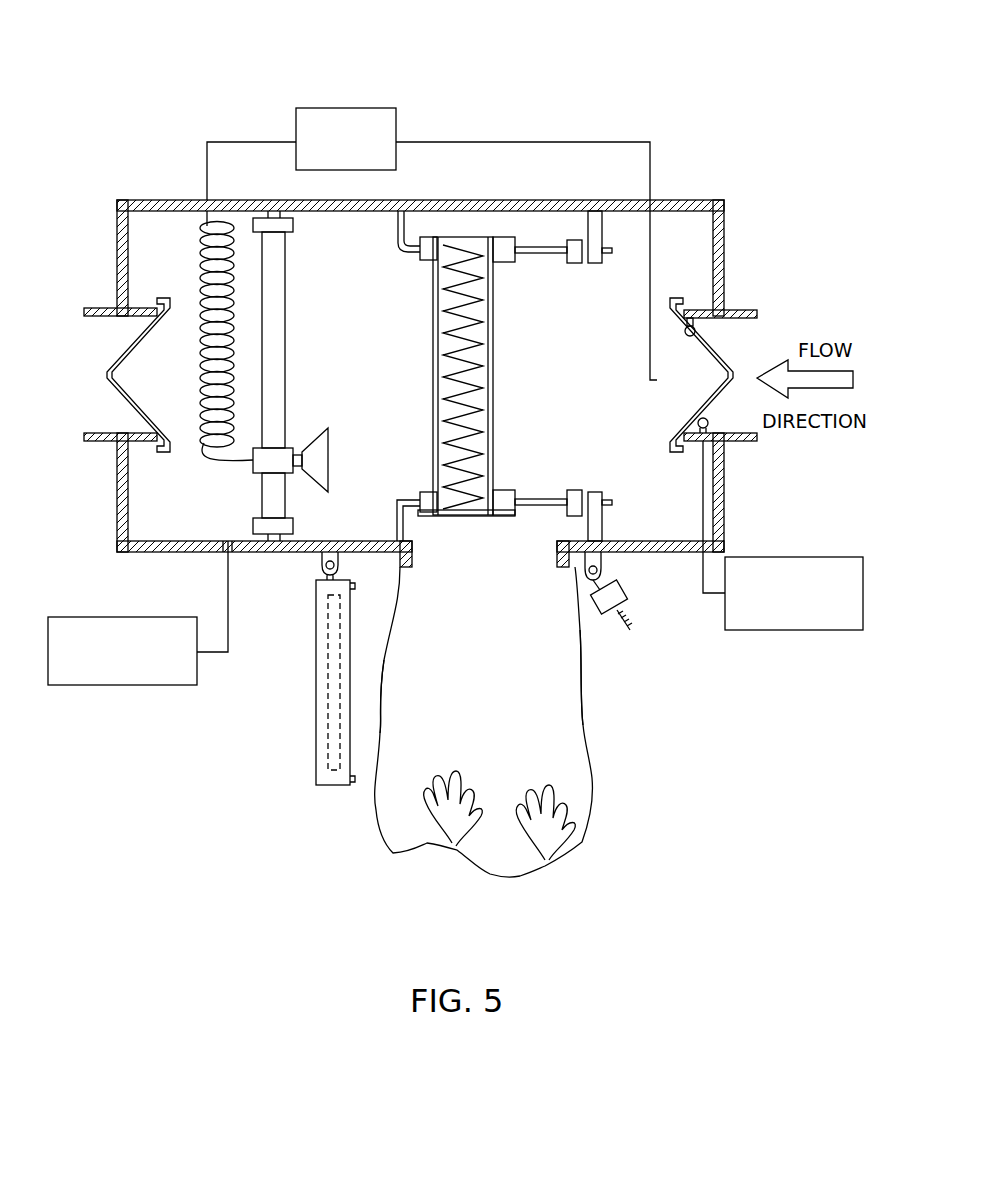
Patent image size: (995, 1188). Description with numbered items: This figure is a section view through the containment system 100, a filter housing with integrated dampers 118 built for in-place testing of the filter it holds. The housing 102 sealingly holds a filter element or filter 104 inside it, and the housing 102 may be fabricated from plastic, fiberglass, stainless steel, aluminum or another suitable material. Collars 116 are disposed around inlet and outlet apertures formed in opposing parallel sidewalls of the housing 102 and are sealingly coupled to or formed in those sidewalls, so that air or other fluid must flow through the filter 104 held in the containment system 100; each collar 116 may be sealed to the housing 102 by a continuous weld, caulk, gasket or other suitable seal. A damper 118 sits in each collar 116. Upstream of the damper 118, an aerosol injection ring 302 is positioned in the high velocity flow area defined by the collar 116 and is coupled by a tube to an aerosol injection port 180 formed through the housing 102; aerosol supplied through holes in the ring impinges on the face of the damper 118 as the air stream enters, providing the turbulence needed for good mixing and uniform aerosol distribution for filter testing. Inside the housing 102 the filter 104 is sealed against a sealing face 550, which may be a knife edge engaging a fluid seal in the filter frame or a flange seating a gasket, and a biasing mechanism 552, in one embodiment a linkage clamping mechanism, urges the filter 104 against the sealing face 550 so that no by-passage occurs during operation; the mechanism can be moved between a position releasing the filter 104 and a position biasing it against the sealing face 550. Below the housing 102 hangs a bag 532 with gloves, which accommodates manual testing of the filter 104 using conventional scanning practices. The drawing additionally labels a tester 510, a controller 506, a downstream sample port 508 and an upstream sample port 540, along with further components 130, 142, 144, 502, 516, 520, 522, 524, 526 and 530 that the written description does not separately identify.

The containment system 100 is at (460, 118).
The housing 102 is at (545, 198).
The filter element 104 is at (470, 372).
The collar 116 is at (100, 303).
The damper 118 is at (130, 356).
The actuator assembly 130 is at (250, 480).
The horn 142 is at (300, 450).
The shaft 144 is at (288, 285).
The aerosol injection port 180 is at (697, 558).
The aerosol injection ring 302 is at (690, 318).
The controller wire 502 is at (224, 558).
The controller 506 is at (122, 651).
The downstream sample port 508 is at (205, 196).
The tester 510 is at (346, 139).
The spring 516 is at (210, 372).
The pump 520 is at (312, 770).
The clamp rod 522 is at (527, 536).
The glove bag sleeve 524 is at (352, 767).
The nozzle hook 526 is at (592, 600).
The glove bag 530 is at (556, 549).
The bag 532 is at (588, 727).
The upstream sample port 540 is at (655, 198).
The sealing face 550 is at (398, 500).
The biasing mechanism 552 is at (560, 490).